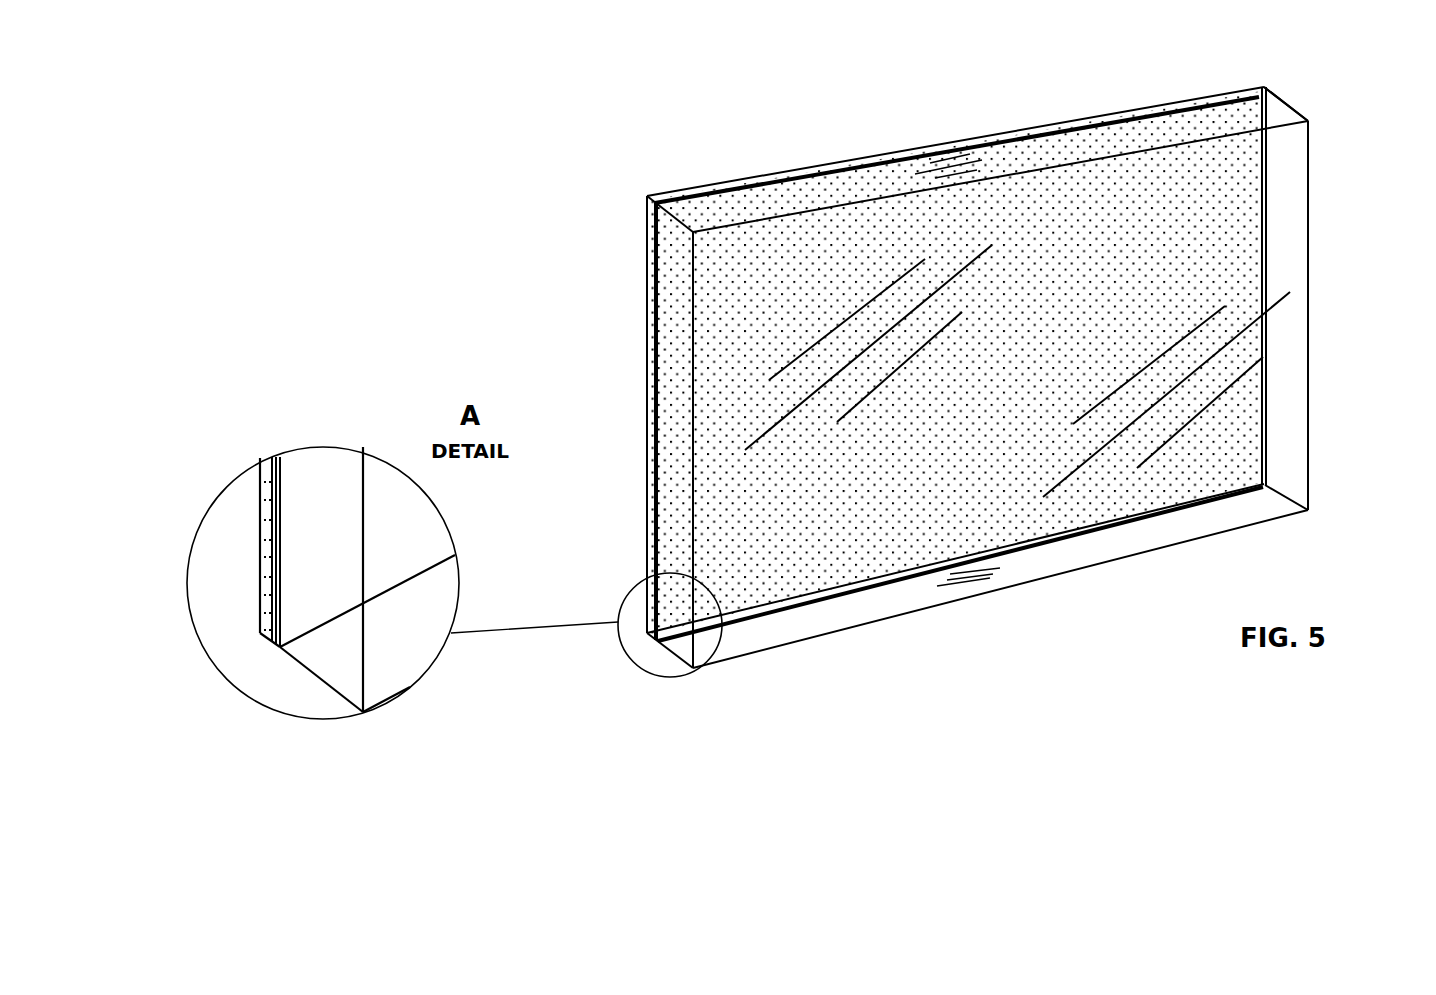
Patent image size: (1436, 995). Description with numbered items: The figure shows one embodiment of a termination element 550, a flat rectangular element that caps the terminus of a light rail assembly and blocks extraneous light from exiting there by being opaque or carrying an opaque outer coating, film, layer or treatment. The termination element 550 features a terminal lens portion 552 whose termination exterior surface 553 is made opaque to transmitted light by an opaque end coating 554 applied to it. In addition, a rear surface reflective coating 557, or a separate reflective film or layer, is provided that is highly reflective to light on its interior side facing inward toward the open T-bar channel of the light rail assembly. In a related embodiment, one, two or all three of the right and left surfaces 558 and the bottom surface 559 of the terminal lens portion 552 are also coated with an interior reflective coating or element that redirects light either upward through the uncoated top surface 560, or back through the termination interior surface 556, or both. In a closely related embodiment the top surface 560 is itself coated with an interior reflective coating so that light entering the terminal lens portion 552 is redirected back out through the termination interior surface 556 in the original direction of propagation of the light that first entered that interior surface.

The termination element 550 is at (598, 171).
The terminal lens portion 552 is at (330, 657).
The termination exterior surface 553 is at (182, 535).
The opaque end coating 554 is at (265, 526).
The termination interior surface 556 is at (1200, 371).
The rear surface reflective coating 557 is at (277, 576).
The right and left surfaces 558 is at (1296, 94).
The bottom surface 559 is at (960, 592).
The top surface 560 is at (945, 162).